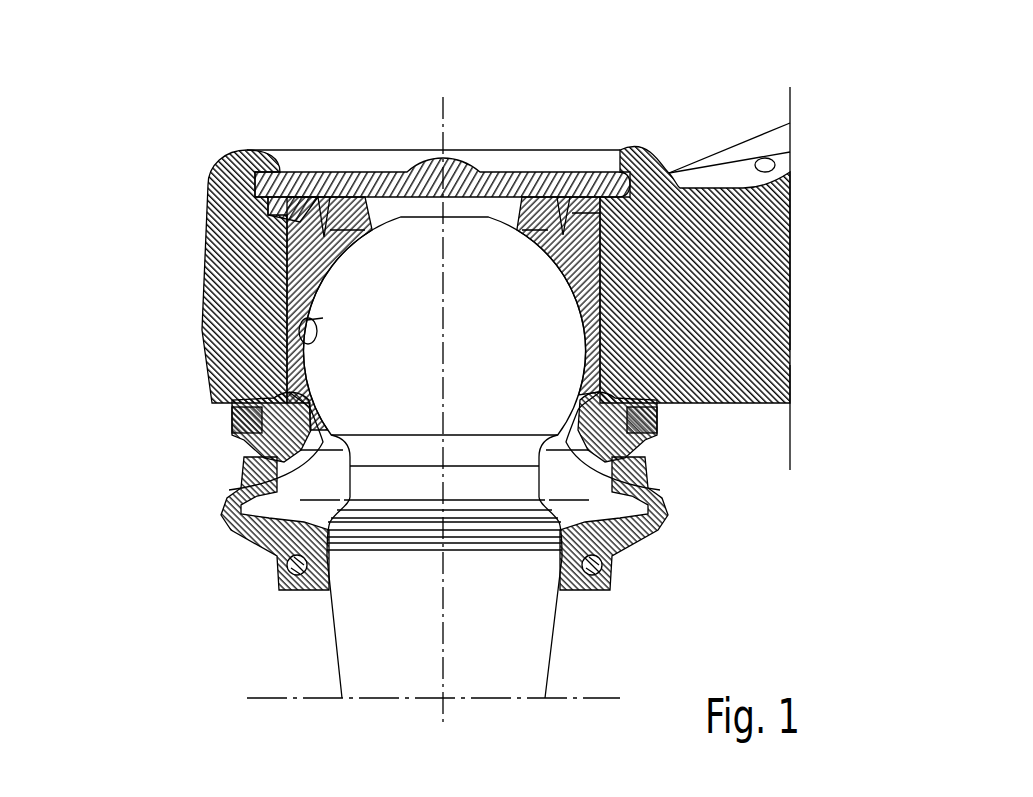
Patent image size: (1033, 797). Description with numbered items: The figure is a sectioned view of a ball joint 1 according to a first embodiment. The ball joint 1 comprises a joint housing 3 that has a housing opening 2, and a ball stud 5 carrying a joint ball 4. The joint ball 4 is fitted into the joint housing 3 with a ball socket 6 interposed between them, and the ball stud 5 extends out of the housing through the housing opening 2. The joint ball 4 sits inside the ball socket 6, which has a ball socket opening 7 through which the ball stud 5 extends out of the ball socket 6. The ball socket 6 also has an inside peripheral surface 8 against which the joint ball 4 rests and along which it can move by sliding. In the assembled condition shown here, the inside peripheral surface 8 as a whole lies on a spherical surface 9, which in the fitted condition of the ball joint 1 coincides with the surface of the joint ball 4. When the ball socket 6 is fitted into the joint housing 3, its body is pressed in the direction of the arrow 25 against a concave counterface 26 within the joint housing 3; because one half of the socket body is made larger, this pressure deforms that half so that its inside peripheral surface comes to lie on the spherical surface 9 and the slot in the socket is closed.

The ball joint 1 is at (148, 118).
The housing opening 2 is at (320, 470).
The joint housing 3 is at (228, 232).
The joint ball 4 is at (500, 243).
The ball stud 5 is at (570, 655).
The ball socket 6 is at (305, 288).
The ball socket opening 7 is at (575, 462).
The inside peripheral surface 8 is at (313, 333).
The spherical surface 9 is at (590, 268).
The arrow 25 is at (443, 66).
The concave counterface 26 is at (582, 400).